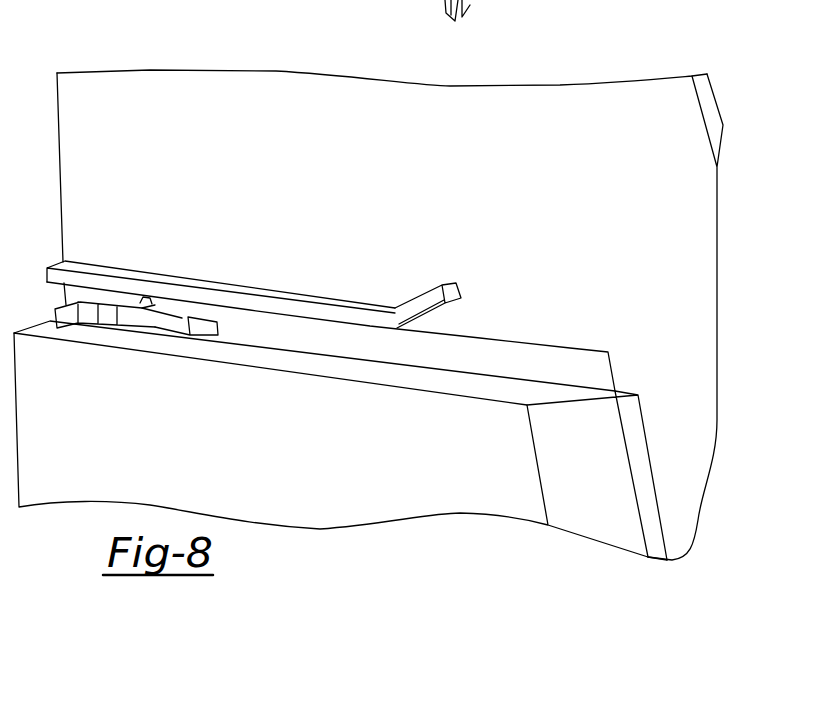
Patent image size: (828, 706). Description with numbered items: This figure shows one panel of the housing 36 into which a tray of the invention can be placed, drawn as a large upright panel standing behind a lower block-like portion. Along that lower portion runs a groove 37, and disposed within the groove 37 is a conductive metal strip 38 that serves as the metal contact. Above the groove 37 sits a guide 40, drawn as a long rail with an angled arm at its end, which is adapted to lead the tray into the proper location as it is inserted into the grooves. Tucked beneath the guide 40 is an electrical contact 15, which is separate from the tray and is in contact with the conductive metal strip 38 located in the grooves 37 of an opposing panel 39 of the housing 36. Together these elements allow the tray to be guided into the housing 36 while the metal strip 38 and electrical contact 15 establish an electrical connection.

The electrical contact 15 is at (170, 317).
The housing 36 is at (600, 112).
The groove 37 is at (367, 342).
The metal strip 38 is at (310, 335).
The opposing panel 39 is at (156, 92).
The guide 40 is at (195, 292).